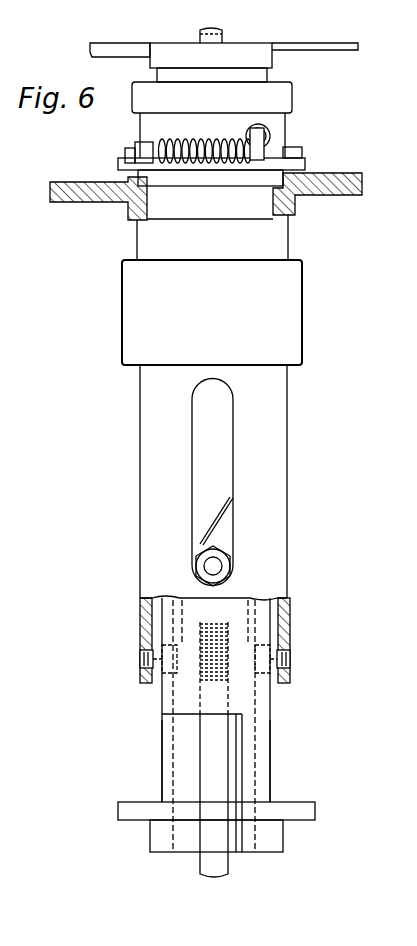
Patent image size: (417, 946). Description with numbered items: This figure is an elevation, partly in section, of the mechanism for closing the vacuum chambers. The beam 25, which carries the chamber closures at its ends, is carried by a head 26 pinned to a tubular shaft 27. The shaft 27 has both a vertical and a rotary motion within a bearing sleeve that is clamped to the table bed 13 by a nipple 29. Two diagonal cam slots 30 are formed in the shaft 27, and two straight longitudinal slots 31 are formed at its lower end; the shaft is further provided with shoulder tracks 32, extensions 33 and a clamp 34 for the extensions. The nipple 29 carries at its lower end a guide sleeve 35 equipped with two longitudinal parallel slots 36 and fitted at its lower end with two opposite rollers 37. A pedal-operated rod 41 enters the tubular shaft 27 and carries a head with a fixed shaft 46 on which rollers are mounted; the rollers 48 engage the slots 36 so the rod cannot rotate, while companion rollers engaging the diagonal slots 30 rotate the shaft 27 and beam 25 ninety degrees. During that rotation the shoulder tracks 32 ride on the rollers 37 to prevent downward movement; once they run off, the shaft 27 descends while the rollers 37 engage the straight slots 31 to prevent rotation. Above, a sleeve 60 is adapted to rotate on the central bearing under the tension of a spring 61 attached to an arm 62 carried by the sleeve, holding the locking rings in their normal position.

The table bed 13 is at (346, 181).
The beam 25 is at (100, 43).
The head 26 is at (238, 50).
The tubular shaft 27 is at (268, 74).
The nipple 29 is at (288, 242).
The diagonal cam slots 30 is at (225, 532).
The straight longitudinal slots 31 is at (160, 700).
The shoulder tracks 32 is at (190, 716).
The extensions 33 is at (162, 782).
The clamp 34 is at (150, 840).
The guide sleeve 35 is at (278, 413).
The longitudinal parallel slots 36 is at (235, 472).
The rollers 37 is at (152, 660).
The rod 41 is at (230, 878).
The fixed shaft 46 is at (225, 565).
The rollers 48 is at (230, 571).
The sleeve 60 is at (285, 120).
The spring 61 is at (226, 141).
The arm 62 is at (270, 145).